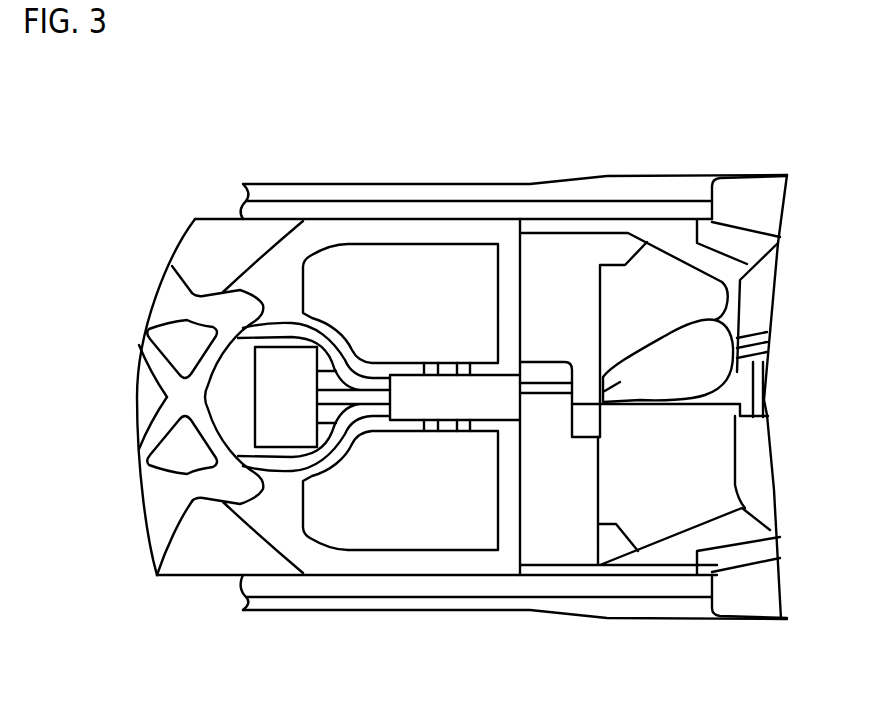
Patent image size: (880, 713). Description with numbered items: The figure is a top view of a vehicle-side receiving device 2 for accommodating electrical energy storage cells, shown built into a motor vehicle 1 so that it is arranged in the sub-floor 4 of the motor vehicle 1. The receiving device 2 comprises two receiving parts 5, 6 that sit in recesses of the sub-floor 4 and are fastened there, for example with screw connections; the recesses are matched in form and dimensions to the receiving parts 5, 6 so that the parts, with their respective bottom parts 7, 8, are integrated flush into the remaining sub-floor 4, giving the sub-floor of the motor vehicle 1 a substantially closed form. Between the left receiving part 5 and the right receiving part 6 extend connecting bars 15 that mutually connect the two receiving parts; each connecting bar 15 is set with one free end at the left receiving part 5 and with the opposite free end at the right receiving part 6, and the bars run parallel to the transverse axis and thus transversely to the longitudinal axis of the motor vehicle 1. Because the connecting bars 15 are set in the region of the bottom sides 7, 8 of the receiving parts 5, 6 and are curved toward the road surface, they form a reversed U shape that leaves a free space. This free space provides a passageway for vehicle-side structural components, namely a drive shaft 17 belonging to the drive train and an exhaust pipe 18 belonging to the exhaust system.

The motor vehicle 1 is at (678, 125).
The receiving device 2 is at (338, 238).
The sub-floor 4 is at (558, 517).
The left receiving part 5 is at (400, 238).
The right receiving part 6 is at (400, 553).
The bottom part of left receiving part 7 is at (410, 318).
The bottom part of right receiving part 8 is at (378, 513).
The connecting bars 15 is at (463, 372).
The drive shaft 17 is at (326, 398).
The exhaust pipe 18 is at (545, 412).